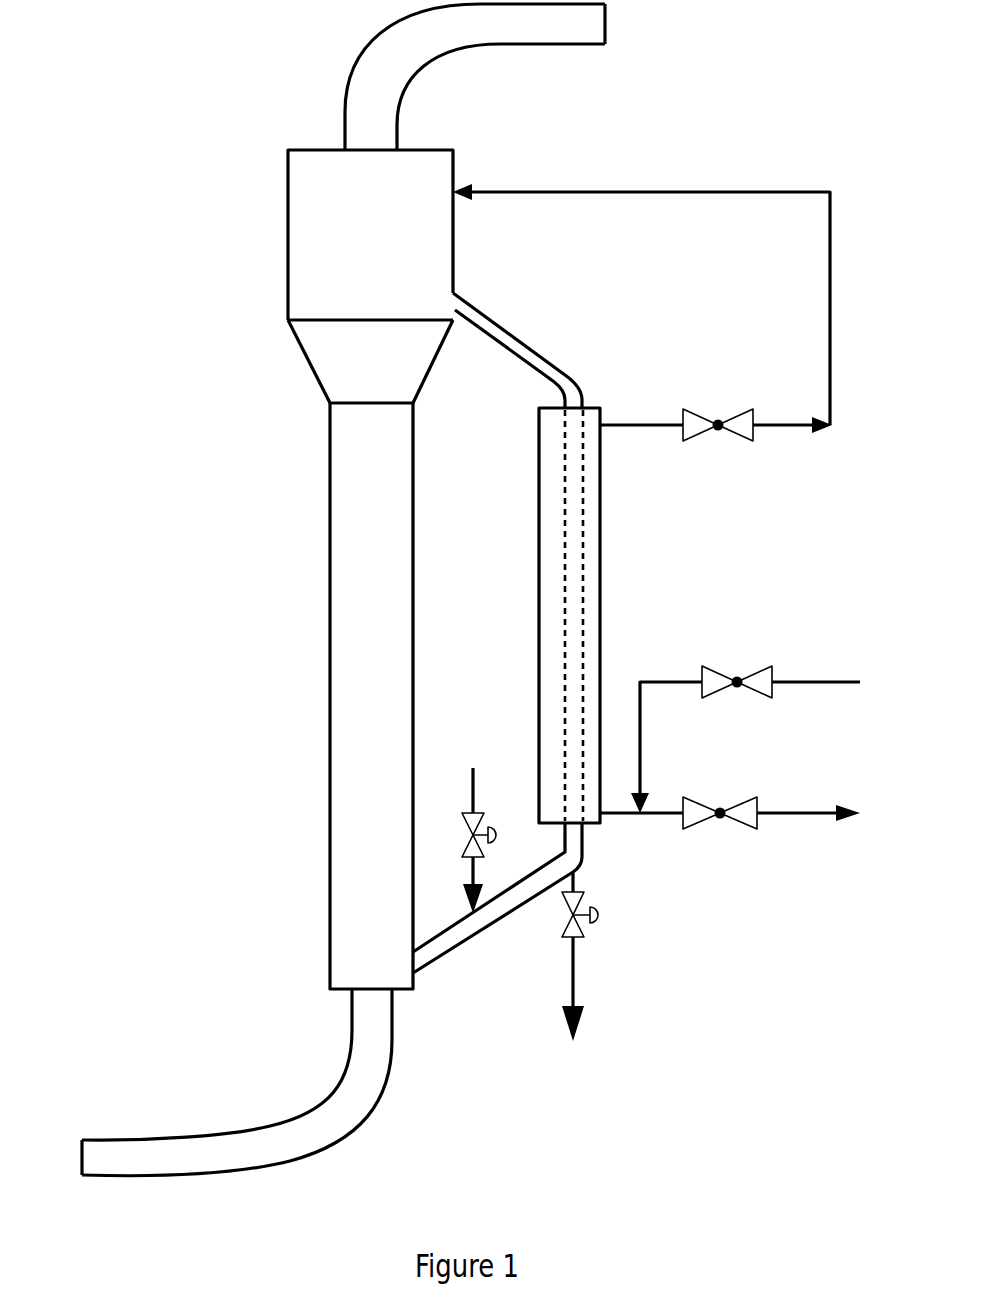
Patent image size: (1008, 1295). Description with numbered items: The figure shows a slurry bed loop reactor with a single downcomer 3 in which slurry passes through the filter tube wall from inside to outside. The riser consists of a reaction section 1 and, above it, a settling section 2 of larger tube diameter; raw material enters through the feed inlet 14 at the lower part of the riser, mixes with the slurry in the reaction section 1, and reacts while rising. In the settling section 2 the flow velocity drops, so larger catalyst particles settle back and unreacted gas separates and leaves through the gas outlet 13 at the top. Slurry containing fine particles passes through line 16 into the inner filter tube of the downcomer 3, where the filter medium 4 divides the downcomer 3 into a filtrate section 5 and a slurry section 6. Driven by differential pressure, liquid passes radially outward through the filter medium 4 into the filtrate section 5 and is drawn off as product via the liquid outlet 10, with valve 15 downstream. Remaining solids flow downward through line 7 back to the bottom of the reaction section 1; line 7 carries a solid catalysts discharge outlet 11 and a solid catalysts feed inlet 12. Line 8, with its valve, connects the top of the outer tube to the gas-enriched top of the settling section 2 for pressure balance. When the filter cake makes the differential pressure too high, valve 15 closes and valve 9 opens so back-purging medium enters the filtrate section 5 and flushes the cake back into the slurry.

The reaction section 1 is at (329, 630).
The settling section 2 is at (320, 243).
The downcomer 3 is at (537, 505).
The filter medium 4 is at (565, 573).
The filtrate section 5 is at (593, 505).
The slurry section 6 is at (575, 627).
The line 7 is at (437, 957).
The line 8 is at (720, 425).
The valve 9 is at (737, 682).
The liquid outlet 10 is at (625, 815).
The solid catalysts discharge outlet 11 is at (578, 960).
The solid catalysts feed inlet 12 is at (470, 870).
The gas outlet 13 is at (505, 45).
The feed inlet 14 is at (318, 1098).
The valve 15 is at (720, 813).
The line 16 is at (530, 350).